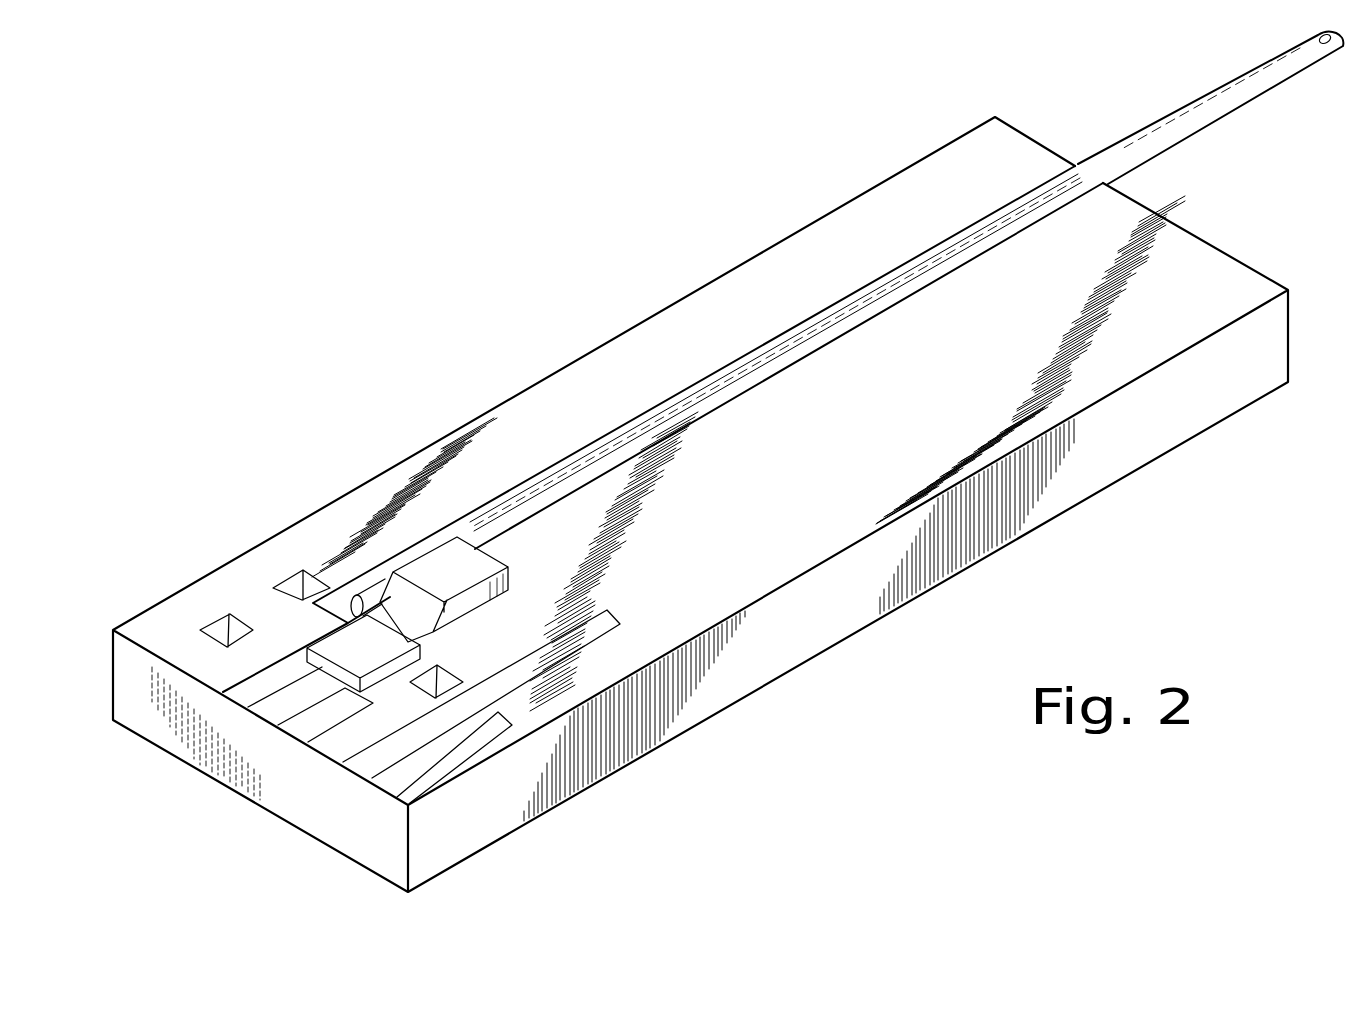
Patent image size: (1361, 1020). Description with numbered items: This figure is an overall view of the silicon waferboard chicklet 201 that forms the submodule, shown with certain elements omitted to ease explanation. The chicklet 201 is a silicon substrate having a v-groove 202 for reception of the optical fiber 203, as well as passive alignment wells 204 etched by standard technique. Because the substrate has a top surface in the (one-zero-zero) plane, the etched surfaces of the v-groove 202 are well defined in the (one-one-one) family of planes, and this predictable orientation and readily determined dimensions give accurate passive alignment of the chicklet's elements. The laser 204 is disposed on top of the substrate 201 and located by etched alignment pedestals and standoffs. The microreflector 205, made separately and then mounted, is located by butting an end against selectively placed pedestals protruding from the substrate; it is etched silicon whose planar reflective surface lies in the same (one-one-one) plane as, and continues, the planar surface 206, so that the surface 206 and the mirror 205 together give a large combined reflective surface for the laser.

The chicklet 201 is at (793, 640).
The v-groove 202 is at (700, 406).
The optical fiber 203 is at (1110, 138).
The passive alignment wells 204 is at (293, 556).
The microreflector 205 is at (448, 608).
The planar surface 206 is at (422, 620).